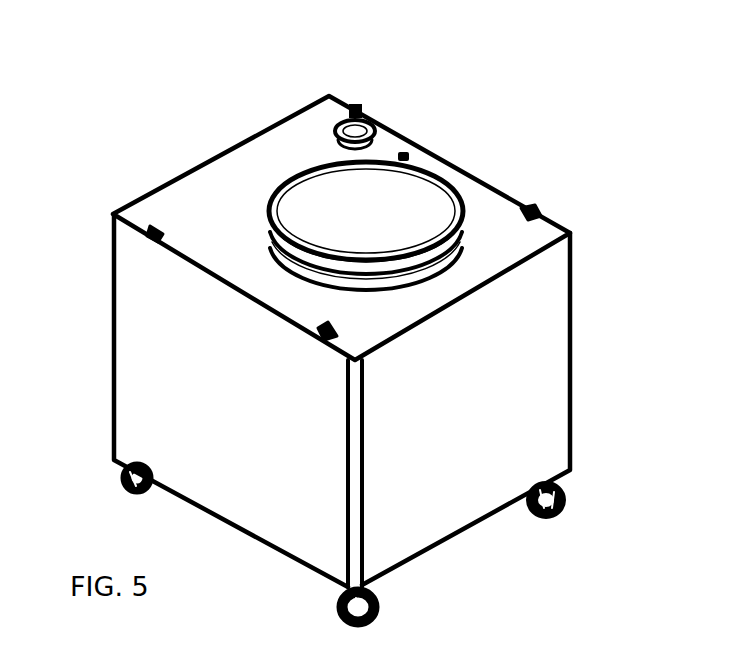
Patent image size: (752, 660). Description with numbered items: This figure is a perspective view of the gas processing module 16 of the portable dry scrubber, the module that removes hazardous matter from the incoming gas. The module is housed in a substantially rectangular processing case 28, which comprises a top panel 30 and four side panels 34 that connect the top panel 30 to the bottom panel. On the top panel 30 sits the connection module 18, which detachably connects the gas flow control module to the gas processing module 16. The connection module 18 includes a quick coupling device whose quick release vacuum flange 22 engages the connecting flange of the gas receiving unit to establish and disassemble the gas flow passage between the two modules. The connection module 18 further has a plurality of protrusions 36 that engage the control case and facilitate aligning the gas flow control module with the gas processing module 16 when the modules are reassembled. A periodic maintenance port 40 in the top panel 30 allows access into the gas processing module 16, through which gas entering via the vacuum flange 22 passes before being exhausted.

The gas processing module 16 is at (576, 156).
The connection module 18 is at (381, 104).
The quick release vacuum flange 22 is at (340, 136).
The processing case 28 is at (576, 318).
The top panel 30 is at (203, 197).
The side panels 34 is at (292, 525).
The protrusions 36 is at (152, 228).
The periodic maintenance port 40 is at (422, 208).